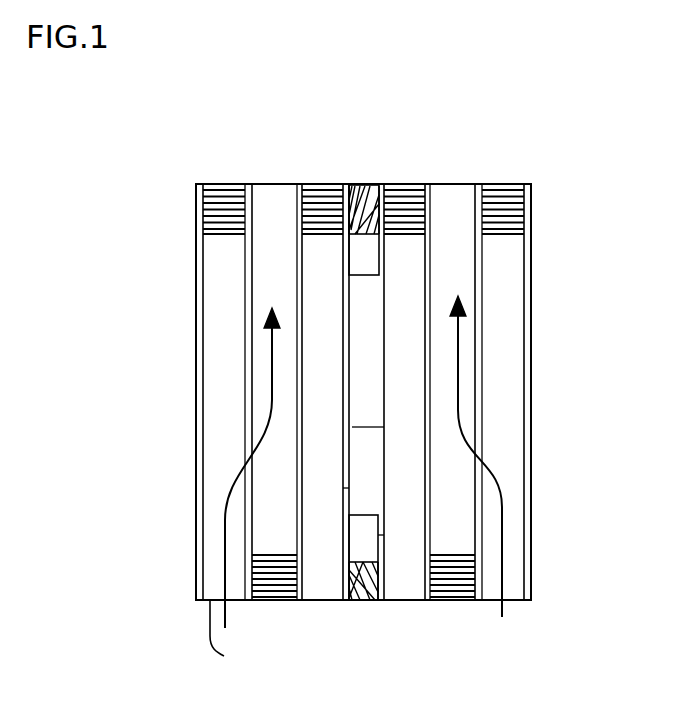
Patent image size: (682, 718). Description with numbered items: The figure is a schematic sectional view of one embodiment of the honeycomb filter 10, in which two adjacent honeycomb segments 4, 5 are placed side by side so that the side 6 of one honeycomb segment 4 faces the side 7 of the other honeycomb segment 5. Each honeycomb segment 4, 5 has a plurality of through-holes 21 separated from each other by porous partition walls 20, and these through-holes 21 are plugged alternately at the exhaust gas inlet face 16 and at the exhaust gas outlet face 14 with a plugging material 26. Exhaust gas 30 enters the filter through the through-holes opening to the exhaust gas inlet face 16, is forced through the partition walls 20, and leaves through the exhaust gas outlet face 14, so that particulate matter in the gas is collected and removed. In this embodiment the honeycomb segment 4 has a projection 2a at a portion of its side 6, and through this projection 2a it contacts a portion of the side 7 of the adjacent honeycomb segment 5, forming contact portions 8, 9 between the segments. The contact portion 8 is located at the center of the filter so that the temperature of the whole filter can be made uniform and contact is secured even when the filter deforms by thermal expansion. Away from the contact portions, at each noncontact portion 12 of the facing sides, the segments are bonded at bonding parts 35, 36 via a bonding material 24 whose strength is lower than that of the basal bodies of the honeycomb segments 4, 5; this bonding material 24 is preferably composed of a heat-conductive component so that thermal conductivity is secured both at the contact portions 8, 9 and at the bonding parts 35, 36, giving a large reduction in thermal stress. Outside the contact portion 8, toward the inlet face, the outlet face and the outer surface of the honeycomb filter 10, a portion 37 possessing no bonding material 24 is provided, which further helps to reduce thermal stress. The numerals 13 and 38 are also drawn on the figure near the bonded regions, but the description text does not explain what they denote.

The honeycomb filter 10 is at (545, 215).
The exhaust gas outlet face 14 is at (530, 186).
The honeycomb segment 4 is at (528, 402).
The honeycomb segment 5 is at (195, 462).
The plugging material 26 is at (222, 186).
The porous partition walls 20 is at (252, 193).
The through-holes 21 is at (278, 196).
The contact portion 9 is at (343, 297).
The projection 2a is at (385, 330).
The noncontact portion 12 is at (372, 186).
The catalyst layer 13 is at (360, 186).
The bonding material 24 is at (355, 186).
The portion possessing no bonding material 37 is at (378, 186).
The bonding part 35 is at (368, 580).
The bonding part 36 is at (347, 572).
The seal 38 is at (358, 578).
The side 6 is at (383, 535).
The side 7 is at (348, 488).
The contact portion 8 is at (352, 427).
The exhaust gas 30 is at (270, 375).
The exhaust gas inlet face 16 is at (230, 636).